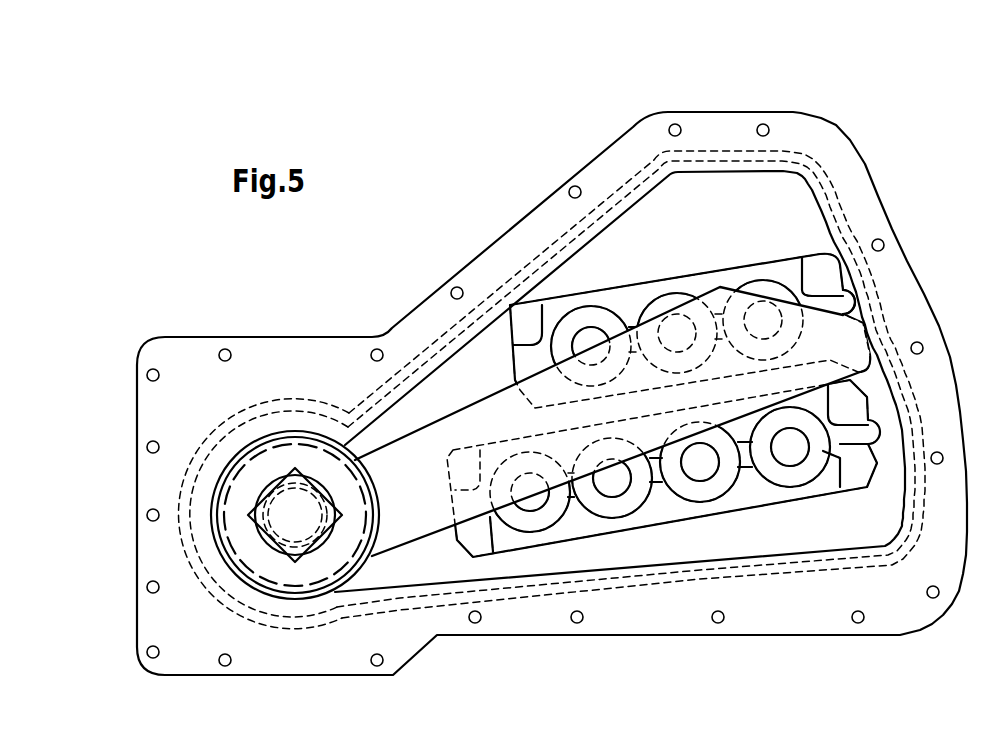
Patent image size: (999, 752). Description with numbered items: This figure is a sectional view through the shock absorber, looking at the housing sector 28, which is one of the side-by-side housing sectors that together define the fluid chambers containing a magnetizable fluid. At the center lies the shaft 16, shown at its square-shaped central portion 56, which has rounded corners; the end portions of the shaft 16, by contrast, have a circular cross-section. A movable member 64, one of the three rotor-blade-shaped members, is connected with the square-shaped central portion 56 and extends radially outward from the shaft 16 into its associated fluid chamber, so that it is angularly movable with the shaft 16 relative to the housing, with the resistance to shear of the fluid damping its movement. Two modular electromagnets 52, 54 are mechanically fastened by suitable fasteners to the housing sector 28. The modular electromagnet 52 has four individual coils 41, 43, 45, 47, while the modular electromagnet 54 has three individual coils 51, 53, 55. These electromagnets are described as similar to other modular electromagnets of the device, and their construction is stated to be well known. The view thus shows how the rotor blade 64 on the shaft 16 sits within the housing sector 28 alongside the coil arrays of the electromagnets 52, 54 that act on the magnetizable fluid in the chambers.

The shaft 16 is at (258, 495).
The housing sector 28 is at (187, 362).
The individual coil 41 is at (531, 533).
The individual coil 43 is at (630, 517).
The individual coil 45 is at (680, 497).
The individual coil 47 is at (722, 532).
The individual coil 51 is at (563, 310).
The modular electromagnet 52 is at (790, 487).
The individual coil 53 is at (667, 293).
The modular electromagnet 54 is at (783, 267).
The individual coil 55 is at (800, 275).
The square-shaped central portion 56 is at (303, 560).
The movable member 64 is at (493, 420).